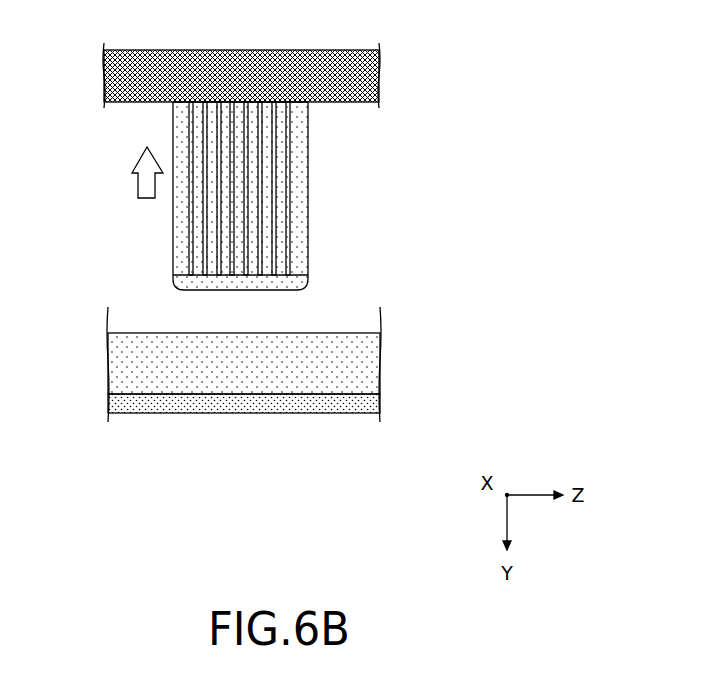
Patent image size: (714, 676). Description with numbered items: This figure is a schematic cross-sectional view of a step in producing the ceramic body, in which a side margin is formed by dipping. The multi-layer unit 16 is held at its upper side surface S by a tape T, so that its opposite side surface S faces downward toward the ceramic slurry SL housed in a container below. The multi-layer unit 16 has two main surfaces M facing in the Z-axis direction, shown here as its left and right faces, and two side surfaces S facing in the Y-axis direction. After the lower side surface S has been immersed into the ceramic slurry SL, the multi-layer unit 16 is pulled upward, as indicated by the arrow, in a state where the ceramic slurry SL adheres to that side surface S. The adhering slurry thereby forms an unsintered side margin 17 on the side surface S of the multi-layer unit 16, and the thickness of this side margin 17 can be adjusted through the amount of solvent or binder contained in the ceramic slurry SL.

The tape T is at (365, 78).
The side surface S is at (227, 93).
The multi-layer unit 16 is at (246, 193).
The main surface M is at (173, 208).
The side margin 17 is at (296, 288).
The ceramic slurry SL is at (358, 372).